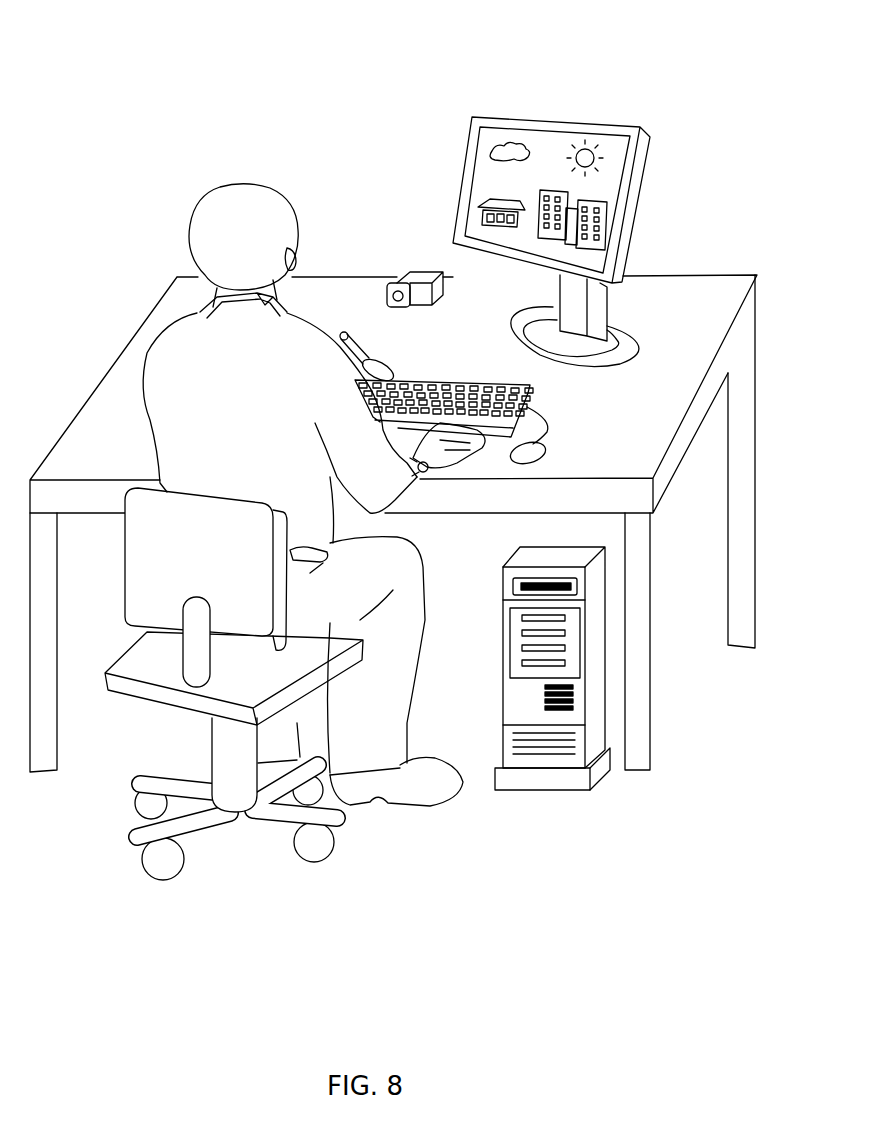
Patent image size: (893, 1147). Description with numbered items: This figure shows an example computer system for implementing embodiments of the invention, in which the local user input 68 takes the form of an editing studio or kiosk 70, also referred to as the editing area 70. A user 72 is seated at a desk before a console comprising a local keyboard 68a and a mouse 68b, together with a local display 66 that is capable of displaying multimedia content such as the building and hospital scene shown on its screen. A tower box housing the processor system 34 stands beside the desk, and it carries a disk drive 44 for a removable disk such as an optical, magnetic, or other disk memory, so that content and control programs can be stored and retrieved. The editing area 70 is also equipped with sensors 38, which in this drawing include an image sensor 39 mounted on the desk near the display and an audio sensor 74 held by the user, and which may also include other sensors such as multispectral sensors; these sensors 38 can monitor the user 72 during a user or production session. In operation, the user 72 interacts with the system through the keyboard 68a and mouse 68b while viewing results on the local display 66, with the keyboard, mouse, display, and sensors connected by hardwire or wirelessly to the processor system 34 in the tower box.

The processor system 34 is at (511, 718).
The sensors 38 is at (417, 278).
The image sensor 39 is at (393, 281).
The disk drive 44 is at (494, 581).
The local display 66 is at (541, 107).
The local user input 68 is at (539, 318).
The local keyboard 68a is at (530, 392).
The mouse 68b is at (547, 452).
The editing studio or kiosk 70 is at (727, 118).
The user 72 is at (252, 406).
The audio sensors 74 is at (350, 337).